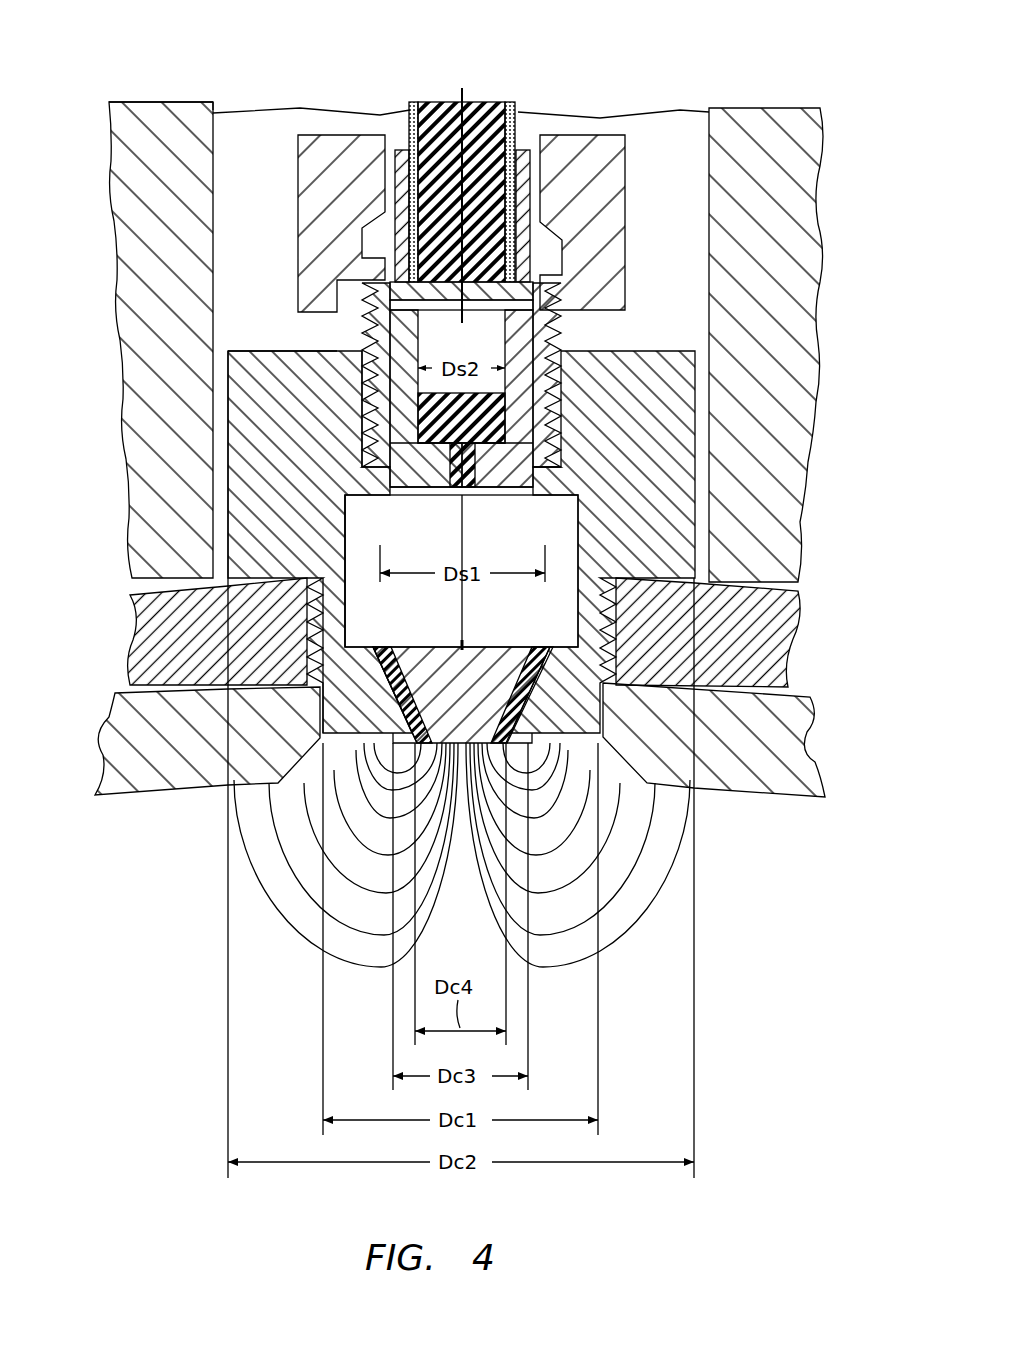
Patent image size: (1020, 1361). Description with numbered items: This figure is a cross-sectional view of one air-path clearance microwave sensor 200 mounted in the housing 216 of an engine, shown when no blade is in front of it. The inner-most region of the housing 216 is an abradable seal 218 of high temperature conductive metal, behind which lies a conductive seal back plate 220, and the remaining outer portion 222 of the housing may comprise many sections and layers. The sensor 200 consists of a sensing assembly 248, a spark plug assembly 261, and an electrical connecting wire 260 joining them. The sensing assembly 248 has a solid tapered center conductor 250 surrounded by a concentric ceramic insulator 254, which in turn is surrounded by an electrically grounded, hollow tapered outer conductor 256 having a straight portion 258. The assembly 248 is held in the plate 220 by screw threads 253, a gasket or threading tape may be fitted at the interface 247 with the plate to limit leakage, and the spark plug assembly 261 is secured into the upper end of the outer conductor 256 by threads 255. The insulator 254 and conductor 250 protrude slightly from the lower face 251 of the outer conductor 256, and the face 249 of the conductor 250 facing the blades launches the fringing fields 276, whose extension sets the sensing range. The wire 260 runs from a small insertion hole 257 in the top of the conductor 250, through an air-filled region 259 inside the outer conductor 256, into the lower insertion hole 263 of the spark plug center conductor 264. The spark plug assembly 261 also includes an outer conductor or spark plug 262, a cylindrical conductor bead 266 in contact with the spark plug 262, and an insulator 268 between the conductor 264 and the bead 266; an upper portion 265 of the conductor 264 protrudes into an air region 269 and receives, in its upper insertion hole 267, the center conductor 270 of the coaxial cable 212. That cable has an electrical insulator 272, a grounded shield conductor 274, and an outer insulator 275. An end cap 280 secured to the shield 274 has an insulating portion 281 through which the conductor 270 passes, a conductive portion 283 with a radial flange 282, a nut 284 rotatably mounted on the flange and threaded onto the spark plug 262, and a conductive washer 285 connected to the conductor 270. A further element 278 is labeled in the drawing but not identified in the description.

The sensor 200 is at (272, 342).
The coaxial cable 212 is at (403, 98).
The housing 216 is at (150, 96).
The abradable seal 218 is at (200, 750).
The seal back plate 220 is at (204, 625).
The outer portion of the housing 222 is at (145, 262).
The interface 247 is at (290, 565).
The sensing assembly 248 is at (222, 462).
The face 249 is at (490, 772).
The center conductor 250 is at (708, 632).
The lower face 251 is at (366, 773).
The screw threads 253 is at (310, 628).
The insulator 254 is at (313, 705).
The threads 255 is at (380, 452).
The outer conductor 256 is at (282, 418).
The insertion hole 257 is at (472, 648).
The straight portion 258 is at (478, 720).
The region 259 is at (410, 628).
The electrical connecting wire 260 is at (468, 612).
The spark plug assembly 261 is at (365, 314).
The outer conductor 262 is at (595, 295).
The lower insertion hole 263 is at (476, 503).
The center conductor 264 is at (533, 383).
The upper portion 265 is at (533, 327).
The cylindrical conductor bead 266 is at (434, 503).
The upper insertion hole 267 is at (400, 425).
The insulator 268 is at (552, 440).
The region 269 is at (555, 482).
The center conductor 270 is at (463, 100).
The electrical insulator 272 is at (425, 100).
The shield conductor 274 is at (512, 100).
The outer insulator 275 is at (522, 125).
The fringing fields 276 is at (262, 880).
The housing bore 278 is at (325, 126).
The end cap 280 is at (575, 200).
The insulating portion 281 is at (582, 222).
The flange 282 is at (358, 205).
The conductive portion 283 is at (396, 126).
The nut 284 is at (262, 108).
The conductive washer 285 is at (362, 371).